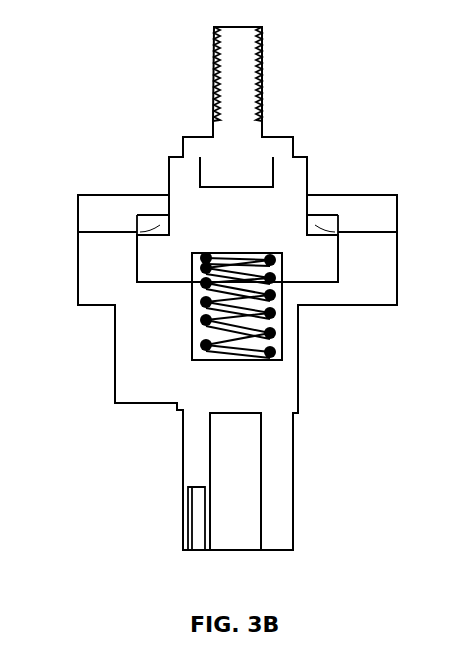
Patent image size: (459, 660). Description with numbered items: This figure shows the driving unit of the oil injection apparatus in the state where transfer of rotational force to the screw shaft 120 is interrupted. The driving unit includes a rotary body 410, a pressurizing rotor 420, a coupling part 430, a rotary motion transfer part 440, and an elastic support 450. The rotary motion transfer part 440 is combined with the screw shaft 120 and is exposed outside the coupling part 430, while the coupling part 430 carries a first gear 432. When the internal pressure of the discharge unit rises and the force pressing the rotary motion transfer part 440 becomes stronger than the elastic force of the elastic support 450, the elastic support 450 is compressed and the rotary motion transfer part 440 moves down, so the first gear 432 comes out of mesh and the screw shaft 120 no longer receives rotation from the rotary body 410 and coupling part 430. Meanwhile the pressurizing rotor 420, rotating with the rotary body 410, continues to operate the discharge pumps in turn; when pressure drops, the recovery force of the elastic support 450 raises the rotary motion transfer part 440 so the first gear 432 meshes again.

The screw shaft 120 is at (215, 67).
The rotary body 410 is at (190, 453).
The pressurizing rotor 420 is at (148, 370).
The coupling part 430 is at (362, 183).
The first gear 432 is at (147, 223).
The rotary motion transfer part 440 is at (190, 190).
The elastic support 450 is at (193, 290).